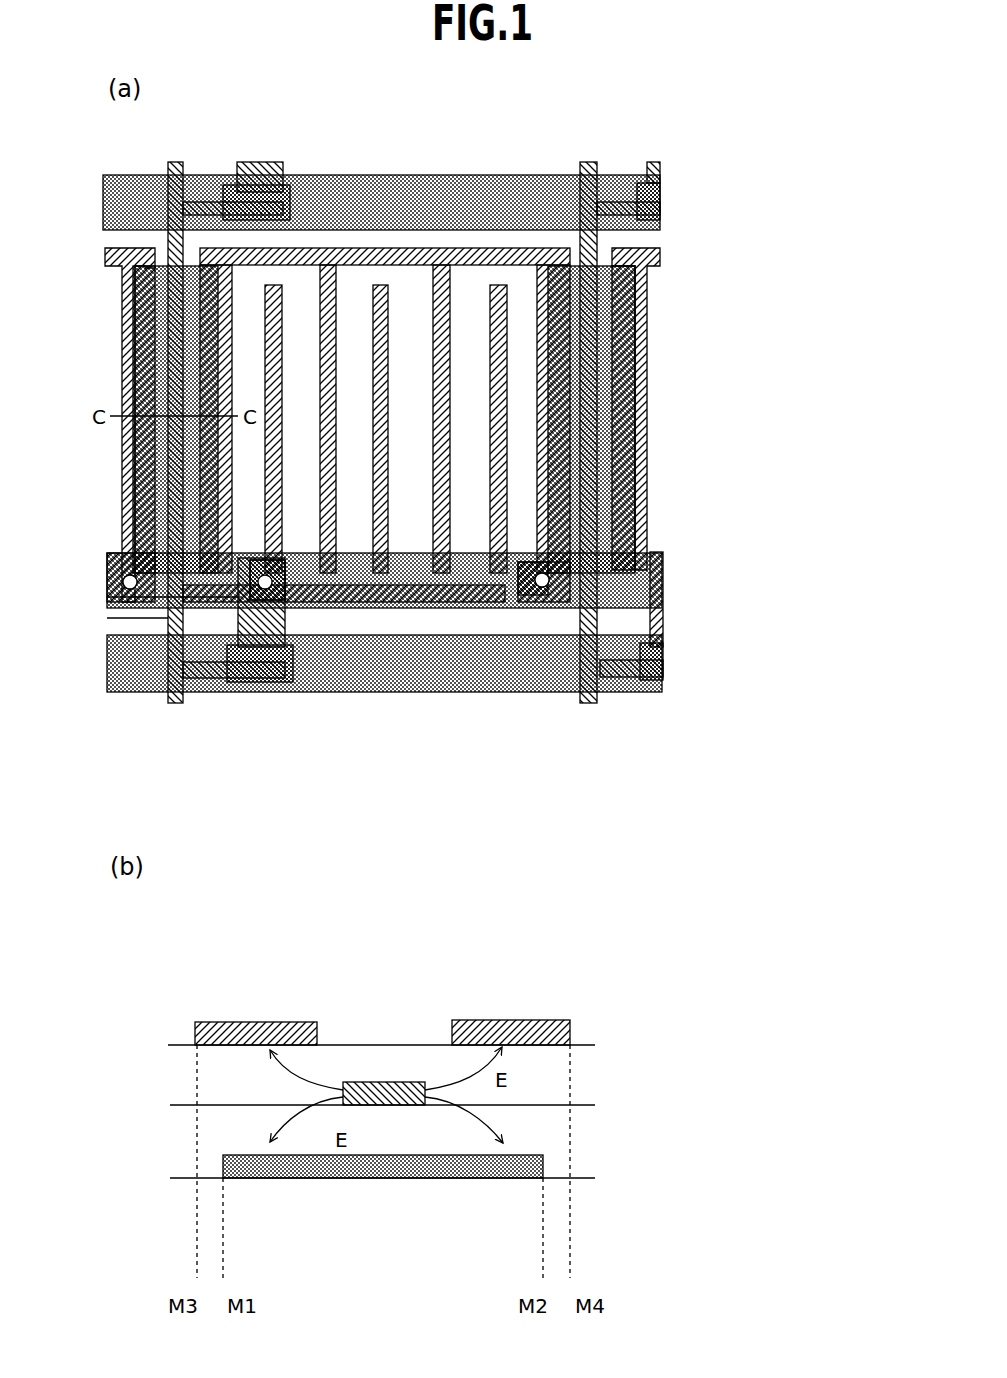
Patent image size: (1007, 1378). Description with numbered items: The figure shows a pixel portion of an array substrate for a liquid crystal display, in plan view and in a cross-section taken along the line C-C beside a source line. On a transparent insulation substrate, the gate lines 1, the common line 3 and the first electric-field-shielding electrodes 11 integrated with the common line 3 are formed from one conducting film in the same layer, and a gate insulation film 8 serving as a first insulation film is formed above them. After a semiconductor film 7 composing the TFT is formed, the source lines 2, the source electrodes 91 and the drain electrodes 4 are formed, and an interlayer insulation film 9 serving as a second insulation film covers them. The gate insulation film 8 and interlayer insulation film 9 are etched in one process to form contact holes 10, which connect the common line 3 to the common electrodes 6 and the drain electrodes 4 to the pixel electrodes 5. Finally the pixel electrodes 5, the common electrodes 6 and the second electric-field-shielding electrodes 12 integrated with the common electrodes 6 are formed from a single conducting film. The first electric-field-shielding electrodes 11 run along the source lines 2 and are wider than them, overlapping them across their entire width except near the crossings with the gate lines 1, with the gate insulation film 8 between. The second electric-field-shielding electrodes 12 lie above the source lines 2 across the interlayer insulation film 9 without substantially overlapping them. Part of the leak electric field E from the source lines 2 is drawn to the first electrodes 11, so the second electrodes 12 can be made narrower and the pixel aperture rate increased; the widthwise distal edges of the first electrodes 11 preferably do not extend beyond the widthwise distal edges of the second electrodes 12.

The gate line 1 is at (384, 705).
The source line 2 is at (233, 861).
The common line 3 is at (346, 562).
The drain electrode 4 is at (335, 665).
The pixel electrode 5 is at (469, 443).
The common electrode 6 is at (385, 342).
The semiconductor film 7 is at (287, 670).
The gate insulation film 8 is at (466, 1141).
The interlayer insulation film 9 is at (465, 1071).
The contact hole 10 is at (510, 634).
The first electric-field-shielding electrode 11 is at (342, 758).
The second electric-field-shielding electrode 12 is at (362, 589).
The source electrode 91 is at (382, 463).